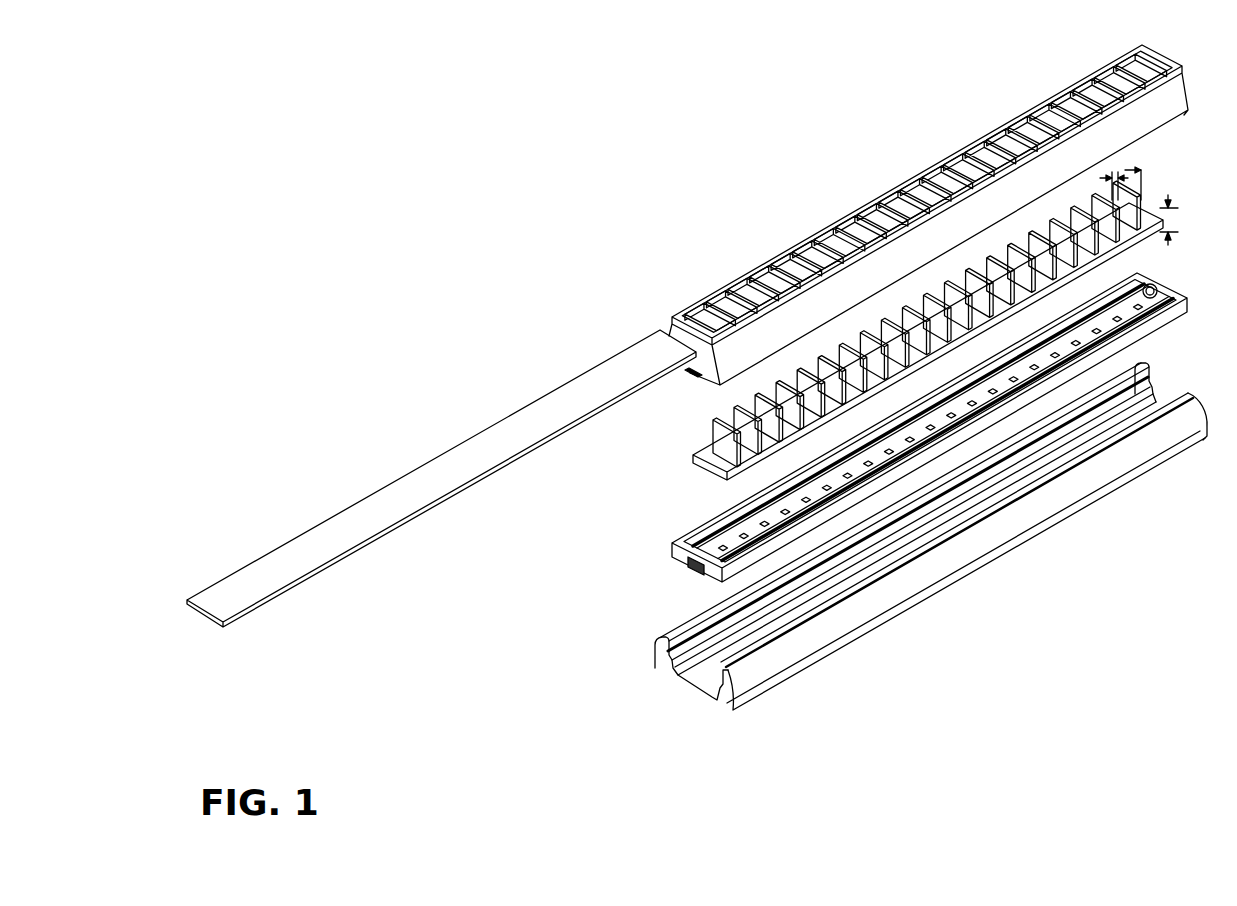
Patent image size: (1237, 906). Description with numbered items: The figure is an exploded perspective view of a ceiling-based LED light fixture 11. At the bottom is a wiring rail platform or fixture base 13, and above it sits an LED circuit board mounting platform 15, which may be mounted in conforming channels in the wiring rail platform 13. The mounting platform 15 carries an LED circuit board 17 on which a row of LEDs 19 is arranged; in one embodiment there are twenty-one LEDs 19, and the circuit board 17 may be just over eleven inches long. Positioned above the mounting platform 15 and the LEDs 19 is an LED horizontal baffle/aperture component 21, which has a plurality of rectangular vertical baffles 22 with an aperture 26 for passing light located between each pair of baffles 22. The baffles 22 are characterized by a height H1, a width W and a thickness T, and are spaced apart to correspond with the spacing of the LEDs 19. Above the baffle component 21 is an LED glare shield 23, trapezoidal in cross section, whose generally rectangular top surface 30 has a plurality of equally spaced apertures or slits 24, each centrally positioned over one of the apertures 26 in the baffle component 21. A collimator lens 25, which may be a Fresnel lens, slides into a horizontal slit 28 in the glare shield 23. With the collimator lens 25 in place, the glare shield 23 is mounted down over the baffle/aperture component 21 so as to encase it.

The ceiling-based LED light fixture 11 is at (931, 536).
The wiring rail platform 13 is at (1065, 497).
The LED circuit board mounting platform 15 is at (911, 411).
The LED circuit board 17 is at (1147, 308).
The LEDs 19 is at (787, 512).
The LED horizontal baffle/aperture component 21 is at (702, 465).
The vertical baffles 22 is at (805, 385).
The LED glare shield 23 is at (910, 203).
The apertures or slits 24 is at (803, 247).
The collimator lens 25 is at (500, 435).
The aperture 26 is at (880, 345).
The horizontal slit 28 is at (667, 322).
The top surface 30 is at (707, 322).
The thickness T is at (1122, 177).
The width W is at (1143, 170).
The height H1 is at (1170, 205).